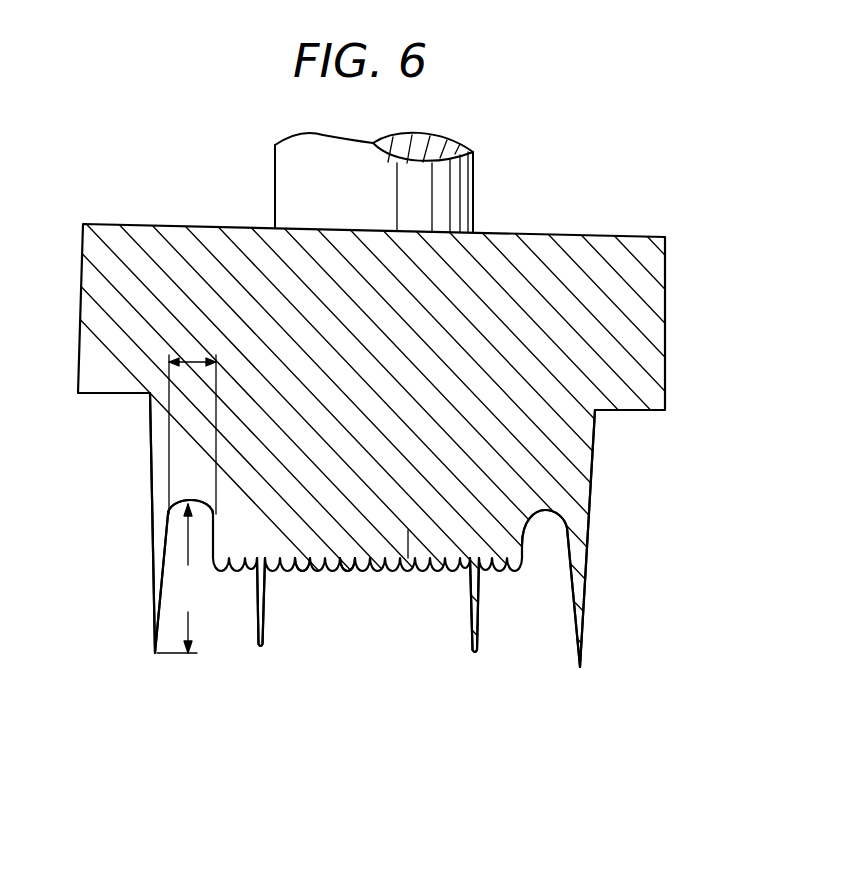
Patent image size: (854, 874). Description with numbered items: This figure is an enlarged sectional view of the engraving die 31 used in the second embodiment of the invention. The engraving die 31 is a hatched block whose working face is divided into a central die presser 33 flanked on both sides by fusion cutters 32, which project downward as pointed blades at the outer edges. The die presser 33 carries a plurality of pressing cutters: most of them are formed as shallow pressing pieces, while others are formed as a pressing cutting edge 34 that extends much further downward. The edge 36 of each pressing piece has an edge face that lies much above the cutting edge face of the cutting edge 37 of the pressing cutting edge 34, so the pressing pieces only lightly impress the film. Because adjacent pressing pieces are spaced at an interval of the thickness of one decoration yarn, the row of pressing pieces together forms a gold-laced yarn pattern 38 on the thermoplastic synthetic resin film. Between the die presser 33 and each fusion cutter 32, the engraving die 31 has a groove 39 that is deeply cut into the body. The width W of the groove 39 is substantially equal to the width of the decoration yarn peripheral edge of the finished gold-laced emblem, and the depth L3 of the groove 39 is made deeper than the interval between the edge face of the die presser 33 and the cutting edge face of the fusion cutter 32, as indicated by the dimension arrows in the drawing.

The engraving die 31 is at (650, 336).
The fusion cutter 32 is at (150, 607).
The die presser 33 is at (413, 575).
The pressing cutting edge 34 is at (477, 617).
The edge 36 is at (302, 572).
The cutting edge 37 is at (260, 645).
The gold-laced yarn pattern 38 is at (352, 572).
The groove 39 is at (178, 519).
The width of the groove W is at (190, 357).
The depth of the groove L3 is at (178, 578).